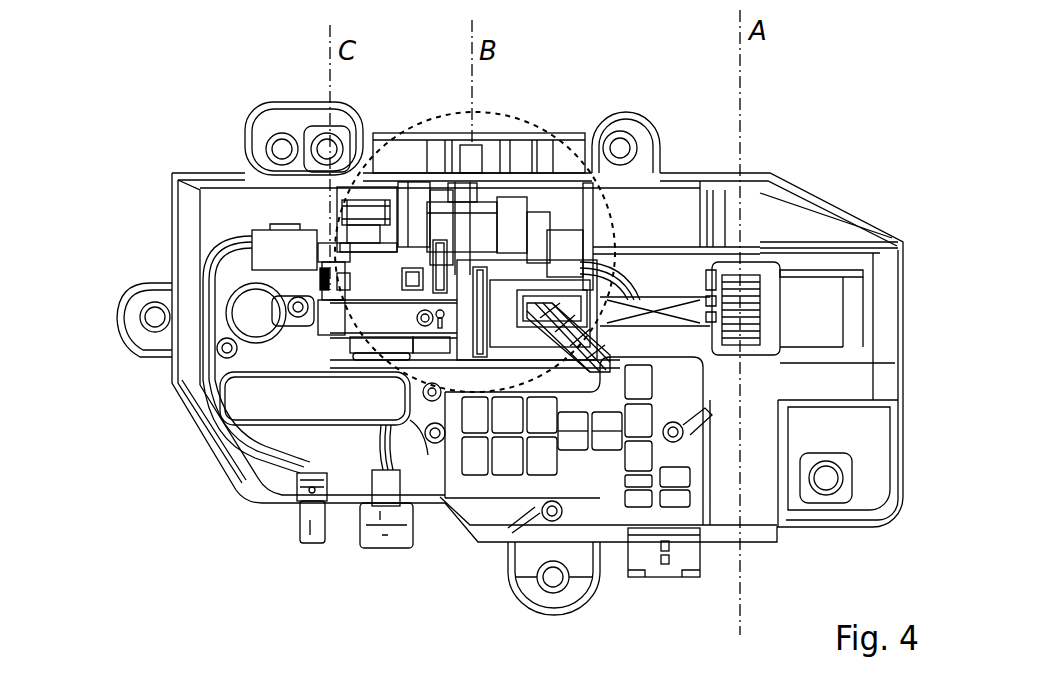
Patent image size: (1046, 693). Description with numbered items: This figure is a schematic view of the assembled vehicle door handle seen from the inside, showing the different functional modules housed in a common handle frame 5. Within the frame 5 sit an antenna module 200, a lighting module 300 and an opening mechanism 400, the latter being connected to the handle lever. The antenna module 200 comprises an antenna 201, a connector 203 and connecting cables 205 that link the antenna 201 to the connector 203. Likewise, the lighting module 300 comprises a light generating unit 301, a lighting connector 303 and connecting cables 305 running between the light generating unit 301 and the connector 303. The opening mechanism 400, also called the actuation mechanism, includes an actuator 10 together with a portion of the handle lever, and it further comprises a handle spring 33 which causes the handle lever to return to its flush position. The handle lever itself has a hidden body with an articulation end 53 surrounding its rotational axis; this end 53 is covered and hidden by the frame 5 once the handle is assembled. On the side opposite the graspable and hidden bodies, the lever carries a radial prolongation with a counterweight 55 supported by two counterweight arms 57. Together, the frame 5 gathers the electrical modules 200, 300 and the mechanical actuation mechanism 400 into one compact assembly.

The actuator 10 is at (615, 535).
The handle frame 5 is at (200, 442).
The opening mechanism 400 is at (514, 240).
The lighting module 300 is at (181, 279).
The light generating unit 301 is at (284, 247).
The connecting cables 305 is at (256, 490).
The lighting connector 303 is at (307, 548).
The antenna module 200 is at (227, 391).
The antenna 201 is at (315, 398).
The connector 203 is at (383, 552).
The connecting cables 205 is at (428, 460).
The handle spring 33 is at (760, 322).
The articulation end 53 is at (767, 345).
The counterweight arms 57 is at (805, 272).
The counterweight 55 is at (860, 272).